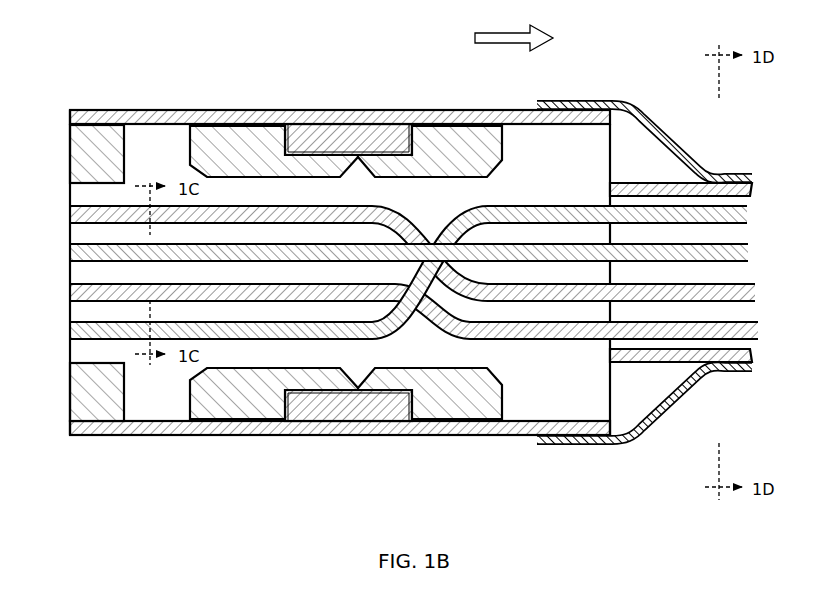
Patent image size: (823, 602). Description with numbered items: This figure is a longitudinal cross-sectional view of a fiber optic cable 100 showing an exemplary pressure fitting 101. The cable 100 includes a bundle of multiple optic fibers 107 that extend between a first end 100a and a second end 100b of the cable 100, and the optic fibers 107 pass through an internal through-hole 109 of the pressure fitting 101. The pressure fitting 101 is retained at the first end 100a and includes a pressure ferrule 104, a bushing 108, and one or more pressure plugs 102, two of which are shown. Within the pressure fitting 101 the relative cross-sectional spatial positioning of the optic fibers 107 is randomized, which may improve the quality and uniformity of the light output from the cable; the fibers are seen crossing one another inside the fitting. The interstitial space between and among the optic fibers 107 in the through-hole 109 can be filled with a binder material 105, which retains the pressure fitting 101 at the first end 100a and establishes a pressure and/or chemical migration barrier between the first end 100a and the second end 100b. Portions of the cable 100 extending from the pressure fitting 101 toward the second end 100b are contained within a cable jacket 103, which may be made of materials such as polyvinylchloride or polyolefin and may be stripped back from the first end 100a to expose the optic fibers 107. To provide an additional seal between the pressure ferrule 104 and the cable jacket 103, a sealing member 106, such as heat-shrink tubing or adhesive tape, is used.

The fiber optic cable 100 is at (283, 52).
The first end 100a is at (51, 152).
The second end 100b is at (511, 40).
The pressure fitting 101 is at (387, 104).
The pressure plugs 102 is at (232, 403).
The cable jacket 103 is at (683, 182).
The pressure ferrule 104 is at (85, 117).
The binder material 105 is at (184, 153).
The sealing member 106 is at (672, 134).
The optic fibers 107 is at (732, 253).
The bushing 108 is at (92, 412).
The internal through-hole 109 is at (143, 410).